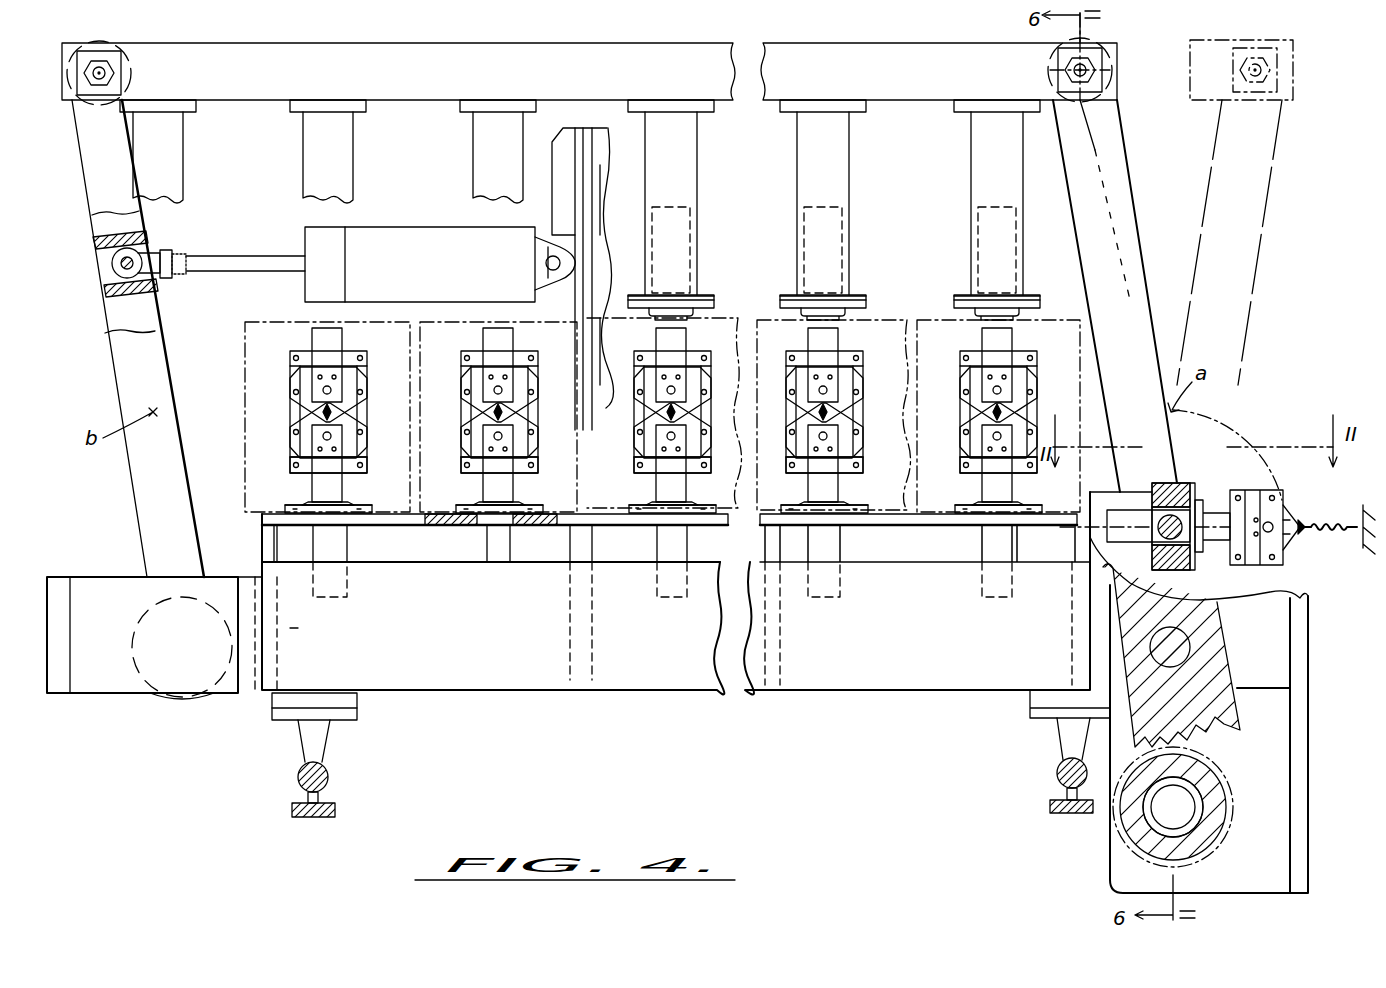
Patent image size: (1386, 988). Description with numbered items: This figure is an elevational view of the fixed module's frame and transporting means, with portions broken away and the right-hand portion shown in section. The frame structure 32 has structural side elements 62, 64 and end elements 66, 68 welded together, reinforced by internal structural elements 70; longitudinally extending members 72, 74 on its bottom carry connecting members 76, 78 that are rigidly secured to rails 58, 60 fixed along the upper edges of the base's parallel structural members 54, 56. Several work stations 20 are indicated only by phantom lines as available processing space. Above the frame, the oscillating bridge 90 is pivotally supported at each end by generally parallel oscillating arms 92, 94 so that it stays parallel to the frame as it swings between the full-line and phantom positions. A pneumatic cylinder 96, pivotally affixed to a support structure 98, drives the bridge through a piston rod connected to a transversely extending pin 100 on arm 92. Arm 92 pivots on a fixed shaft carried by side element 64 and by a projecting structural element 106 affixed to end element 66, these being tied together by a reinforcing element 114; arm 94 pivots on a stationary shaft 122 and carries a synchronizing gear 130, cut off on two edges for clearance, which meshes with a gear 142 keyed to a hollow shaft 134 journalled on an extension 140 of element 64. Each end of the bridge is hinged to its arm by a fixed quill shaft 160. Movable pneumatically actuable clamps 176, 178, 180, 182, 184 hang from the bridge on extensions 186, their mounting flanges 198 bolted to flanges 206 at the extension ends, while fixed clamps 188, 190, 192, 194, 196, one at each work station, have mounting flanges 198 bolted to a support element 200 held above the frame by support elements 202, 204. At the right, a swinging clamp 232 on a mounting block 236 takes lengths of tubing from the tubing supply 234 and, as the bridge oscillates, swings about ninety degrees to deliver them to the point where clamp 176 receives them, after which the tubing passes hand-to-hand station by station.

The work station 20 is at (245, 325).
The frame structure 32 is at (538, 675).
The longitudinally extending structural member 54 is at (292, 795).
The longitudinally extending structural member 56 is at (1050, 800).
The rail 58 is at (330, 775).
The rail 60 is at (1057, 775).
The structural side element 62 is at (676, 593).
The structural side element 64 is at (1278, 665).
The end element 66 is at (290, 633).
The end element 68 is at (1066, 638).
The internal structural element 70 is at (575, 628).
The longitudinally extending member 72 is at (360, 706).
The longitudinally extending member 74 is at (1030, 702).
The connecting member 76 is at (300, 742).
The connecting member 78 is at (1060, 742).
The oscillating bridge 90 is at (556, 43).
The oscillating arm 92 is at (118, 380).
The oscillating arm 94 is at (1128, 188).
The pneumatic cylinder 96 is at (380, 264).
The support structure 98 is at (572, 210).
The transversely extending pin 100 is at (112, 263).
The projecting structural element 106 is at (115, 688).
The reinforcing element 114 is at (62, 577).
The stationary shaft 122 is at (1192, 650).
The synchronizing gear 130 is at (1171, 655).
The hollow shaft 134 is at (1200, 790).
The extension 140 is at (1280, 790).
The gear 142 is at (1215, 832).
The fixed quill shaft 160 is at (1058, 70).
The pneumatically actuable clamp 176 is at (950, 354).
The pneumatically actuable clamp 178 is at (782, 354).
The pneumatically actuable clamp 180 is at (702, 350).
The pneumatically actuable clamp 182 is at (552, 357).
The pneumatically actuable clamp 184 is at (382, 357).
The extension 186 is at (580, 210).
The fixed clamp 188 is at (972, 486).
The fixed clamp 190 is at (799, 486).
The fixed clamp 192 is at (642, 486).
The fixed clamp 194 is at (472, 486).
The fixed clamp 196 is at (297, 486).
The mounting flange 198 is at (355, 505).
The support element 200 is at (378, 527).
The support element 202 is at (265, 532).
The support element 204 is at (1070, 545).
The flange 206 is at (696, 299).
The swinging clamp 232 is at (1306, 487).
The tubing supply 234 is at (1318, 520).
The mounting block 236 is at (1180, 490).